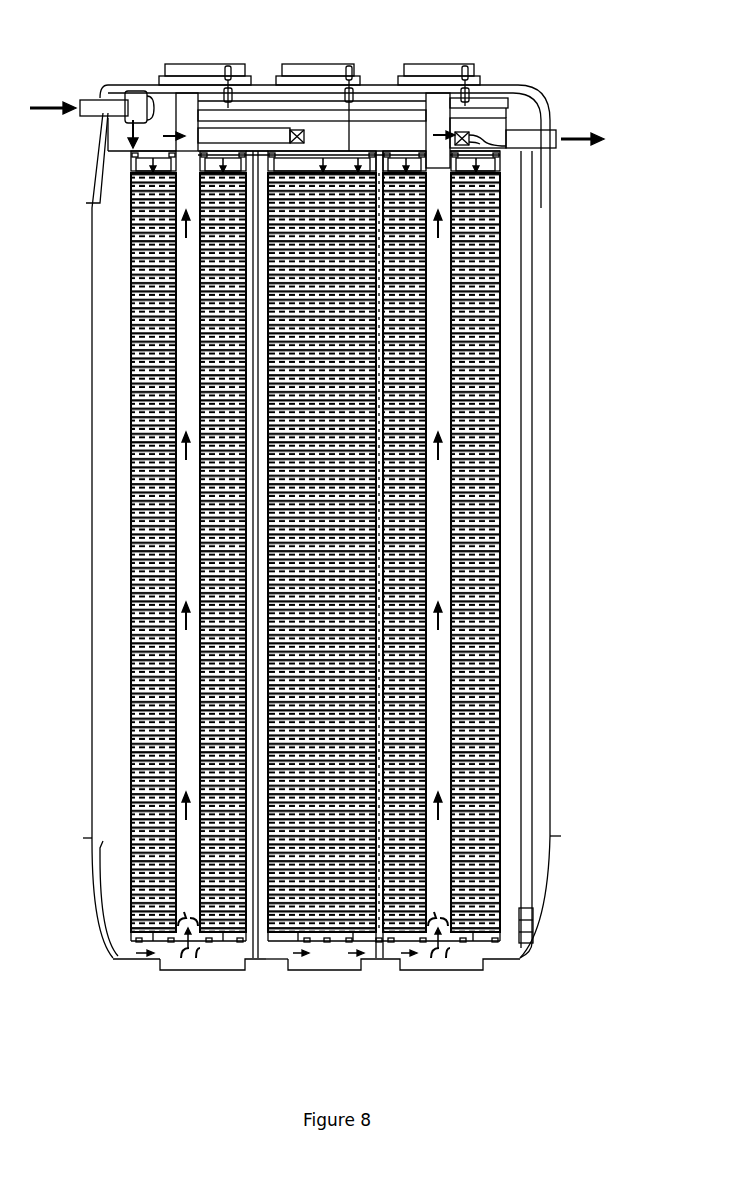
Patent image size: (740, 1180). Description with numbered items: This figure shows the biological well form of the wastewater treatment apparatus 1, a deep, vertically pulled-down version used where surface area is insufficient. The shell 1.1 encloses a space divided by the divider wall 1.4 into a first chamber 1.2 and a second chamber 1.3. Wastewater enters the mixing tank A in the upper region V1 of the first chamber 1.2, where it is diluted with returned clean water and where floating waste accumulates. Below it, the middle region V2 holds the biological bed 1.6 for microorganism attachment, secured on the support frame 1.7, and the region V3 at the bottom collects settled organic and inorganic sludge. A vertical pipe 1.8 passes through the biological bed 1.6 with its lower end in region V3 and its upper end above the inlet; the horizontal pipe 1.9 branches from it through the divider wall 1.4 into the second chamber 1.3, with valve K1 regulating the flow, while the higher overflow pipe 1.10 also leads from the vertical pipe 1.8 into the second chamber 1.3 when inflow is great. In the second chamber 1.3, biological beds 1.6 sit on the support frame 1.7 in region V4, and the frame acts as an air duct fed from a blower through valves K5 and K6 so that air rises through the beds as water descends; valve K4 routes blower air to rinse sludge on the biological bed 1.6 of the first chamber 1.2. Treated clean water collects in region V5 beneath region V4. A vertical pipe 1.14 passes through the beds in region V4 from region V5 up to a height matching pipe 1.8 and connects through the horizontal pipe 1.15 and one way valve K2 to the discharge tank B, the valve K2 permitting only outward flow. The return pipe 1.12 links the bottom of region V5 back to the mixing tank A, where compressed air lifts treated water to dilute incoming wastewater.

The wastewater treatment apparatus 1 is at (648, 45).
The shell 1.1 is at (88, 197).
The first chamber 1.2 is at (155, 945).
The second chamber 1.3 is at (500, 938).
The divider wall 1.4 is at (258, 930).
The biological bed 1.6 is at (125, 580).
The support frame 1.7 is at (398, 932).
The vertical pipe 1.8 is at (178, 98).
The horizontal pipe 1.9 is at (240, 104).
The overflow pipe 1.10 is at (262, 108).
The return pipe 1.12 is at (370, 100).
The vertical pipe 1.14 is at (432, 100).
The horizontal pipe 1.15 is at (490, 133).
The mixing tank A is at (127, 97).
The discharge tank B is at (505, 105).
The valve K1 is at (315, 138).
The one way valve K2 is at (462, 126).
The valve K4 is at (247, 53).
The valve K5 is at (368, 51).
The valve K6 is at (460, 92).
The upper region V1 is at (146, 134).
The middle region V2 is at (209, 515).
The region V3 is at (210, 937).
The region V4 is at (394, 515).
The region V5 is at (410, 937).